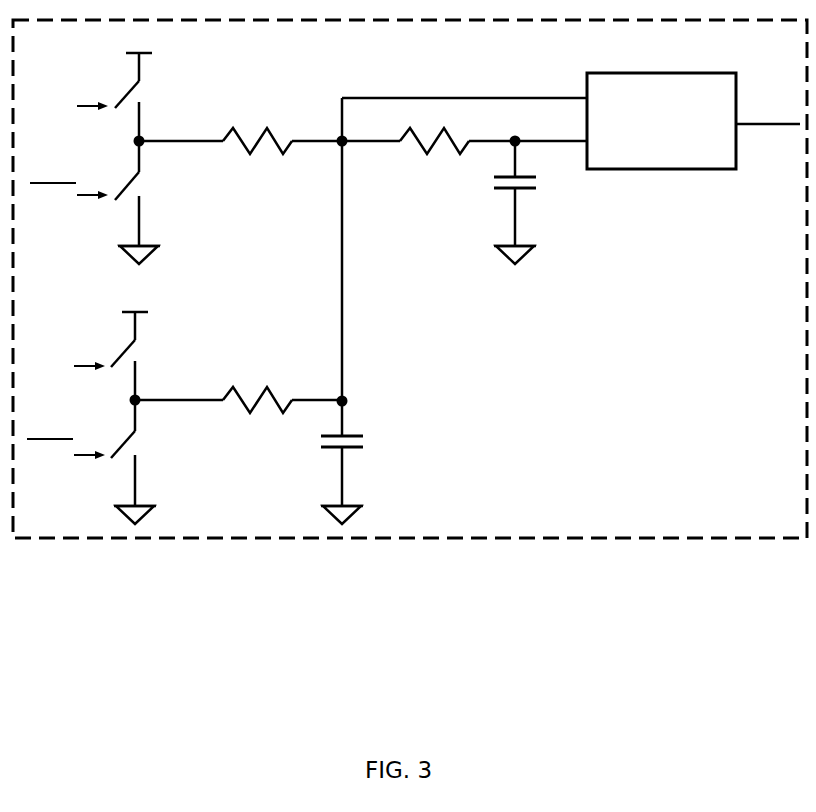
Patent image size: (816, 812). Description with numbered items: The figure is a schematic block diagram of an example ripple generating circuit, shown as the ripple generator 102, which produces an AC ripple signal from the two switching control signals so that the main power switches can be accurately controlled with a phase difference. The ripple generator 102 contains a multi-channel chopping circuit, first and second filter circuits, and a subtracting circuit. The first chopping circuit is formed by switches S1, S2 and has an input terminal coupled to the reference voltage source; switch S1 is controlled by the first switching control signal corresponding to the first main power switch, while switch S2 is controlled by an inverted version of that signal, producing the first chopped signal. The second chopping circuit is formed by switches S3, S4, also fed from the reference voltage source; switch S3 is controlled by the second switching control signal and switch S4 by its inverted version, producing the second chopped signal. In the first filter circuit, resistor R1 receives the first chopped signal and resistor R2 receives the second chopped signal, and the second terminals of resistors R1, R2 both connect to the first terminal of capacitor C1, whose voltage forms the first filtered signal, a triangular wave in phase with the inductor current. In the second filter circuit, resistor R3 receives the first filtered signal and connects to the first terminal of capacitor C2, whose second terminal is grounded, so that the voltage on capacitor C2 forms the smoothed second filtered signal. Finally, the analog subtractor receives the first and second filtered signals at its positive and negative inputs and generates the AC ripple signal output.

The ripple generator 102 is at (740, 511).
The switch S1 is at (112, 86).
The switch S2 is at (104, 202).
The switch S3 is at (101, 343).
The switch S4 is at (100, 462).
The resistor R1 is at (257, 156).
The resistor R2 is at (257, 417).
The resistor R3 is at (405, 155).
The capacitor C1 is at (352, 462).
The capacitor C2 is at (501, 202).